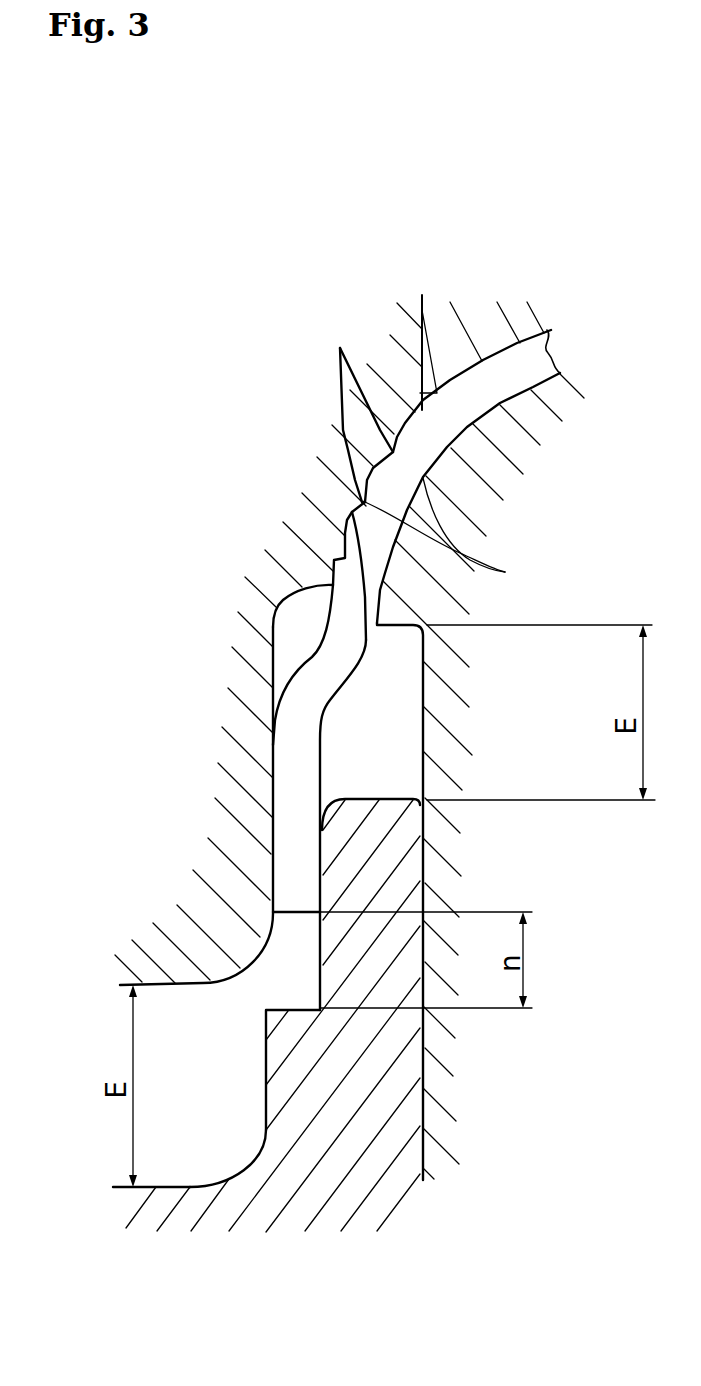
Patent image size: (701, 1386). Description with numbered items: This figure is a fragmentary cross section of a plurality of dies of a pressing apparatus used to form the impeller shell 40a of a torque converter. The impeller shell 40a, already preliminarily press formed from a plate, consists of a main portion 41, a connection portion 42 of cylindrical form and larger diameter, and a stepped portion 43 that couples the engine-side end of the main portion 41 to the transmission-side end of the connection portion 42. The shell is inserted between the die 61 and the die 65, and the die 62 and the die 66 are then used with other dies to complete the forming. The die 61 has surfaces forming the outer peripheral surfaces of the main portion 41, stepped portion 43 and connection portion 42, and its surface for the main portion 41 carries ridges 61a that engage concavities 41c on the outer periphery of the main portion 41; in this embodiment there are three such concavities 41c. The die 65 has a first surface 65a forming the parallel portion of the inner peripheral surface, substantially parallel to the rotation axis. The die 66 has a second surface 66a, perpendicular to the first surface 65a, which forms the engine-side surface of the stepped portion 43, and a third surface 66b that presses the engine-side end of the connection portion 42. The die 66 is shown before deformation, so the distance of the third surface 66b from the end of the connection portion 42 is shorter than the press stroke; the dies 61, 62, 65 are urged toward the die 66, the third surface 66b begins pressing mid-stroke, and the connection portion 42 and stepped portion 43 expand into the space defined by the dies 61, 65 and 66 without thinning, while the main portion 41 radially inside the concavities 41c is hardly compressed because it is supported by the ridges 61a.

The impeller shell 40a is at (559, 355).
The main portion 41 is at (452, 430).
The concavities 41c is at (505, 572).
The connection portion 42 is at (285, 820).
The stepped portion 43 is at (345, 622).
The die 61 is at (250, 640).
The ridges 61a is at (340, 350).
The die 62 is at (478, 330).
The die 65 is at (480, 517).
The first surface 65a is at (362, 502).
The die 66 is at (327, 1130).
The second surface 66a is at (360, 797).
The third surface 66b is at (300, 1010).